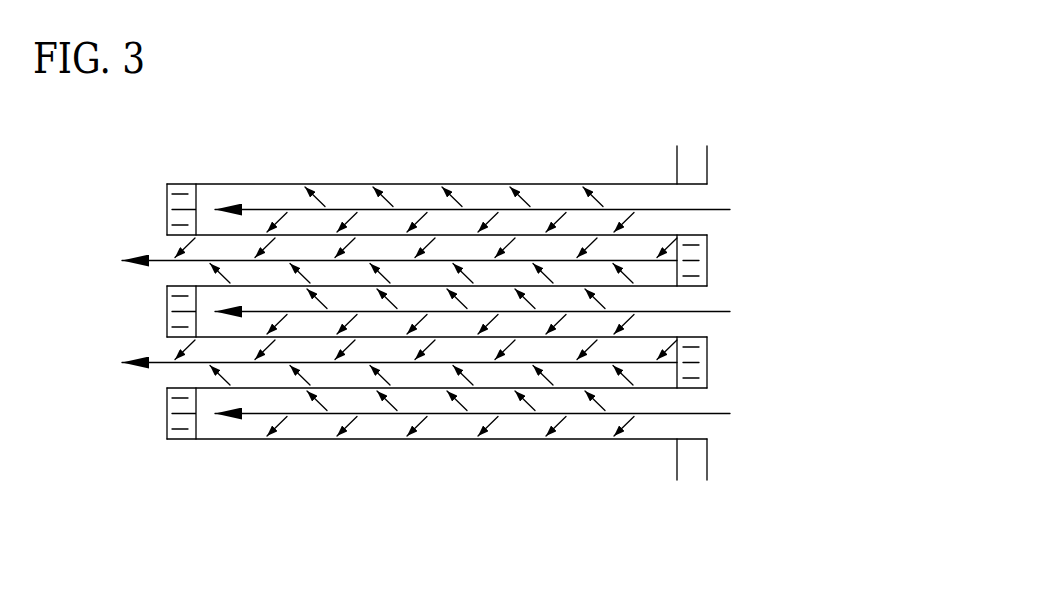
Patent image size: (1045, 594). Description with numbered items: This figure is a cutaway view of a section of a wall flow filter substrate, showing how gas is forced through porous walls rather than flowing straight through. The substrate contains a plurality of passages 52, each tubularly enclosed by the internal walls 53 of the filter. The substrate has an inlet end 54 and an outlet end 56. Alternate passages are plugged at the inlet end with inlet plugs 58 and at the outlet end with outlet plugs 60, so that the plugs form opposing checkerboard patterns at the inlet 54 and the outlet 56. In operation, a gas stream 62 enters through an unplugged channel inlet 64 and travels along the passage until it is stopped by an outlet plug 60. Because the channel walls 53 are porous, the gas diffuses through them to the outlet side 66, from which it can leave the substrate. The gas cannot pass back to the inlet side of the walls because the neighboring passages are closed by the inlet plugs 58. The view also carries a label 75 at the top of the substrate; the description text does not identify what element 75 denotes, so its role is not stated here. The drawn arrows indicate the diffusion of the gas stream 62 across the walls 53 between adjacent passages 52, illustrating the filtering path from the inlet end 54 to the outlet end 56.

The passages 52 is at (580, 223).
The internal walls 53 is at (360, 282).
The inlet end 54 is at (672, 487).
The outlet end 56 is at (140, 448).
The inlet plugs 58 is at (707, 160).
The outlet plugs 60 is at (167, 210).
The gas stream 62 is at (438, 210).
The unplugged channel inlet 64 is at (695, 222).
The outlet side 66 is at (167, 247).
The top plate 75 is at (340, 183).